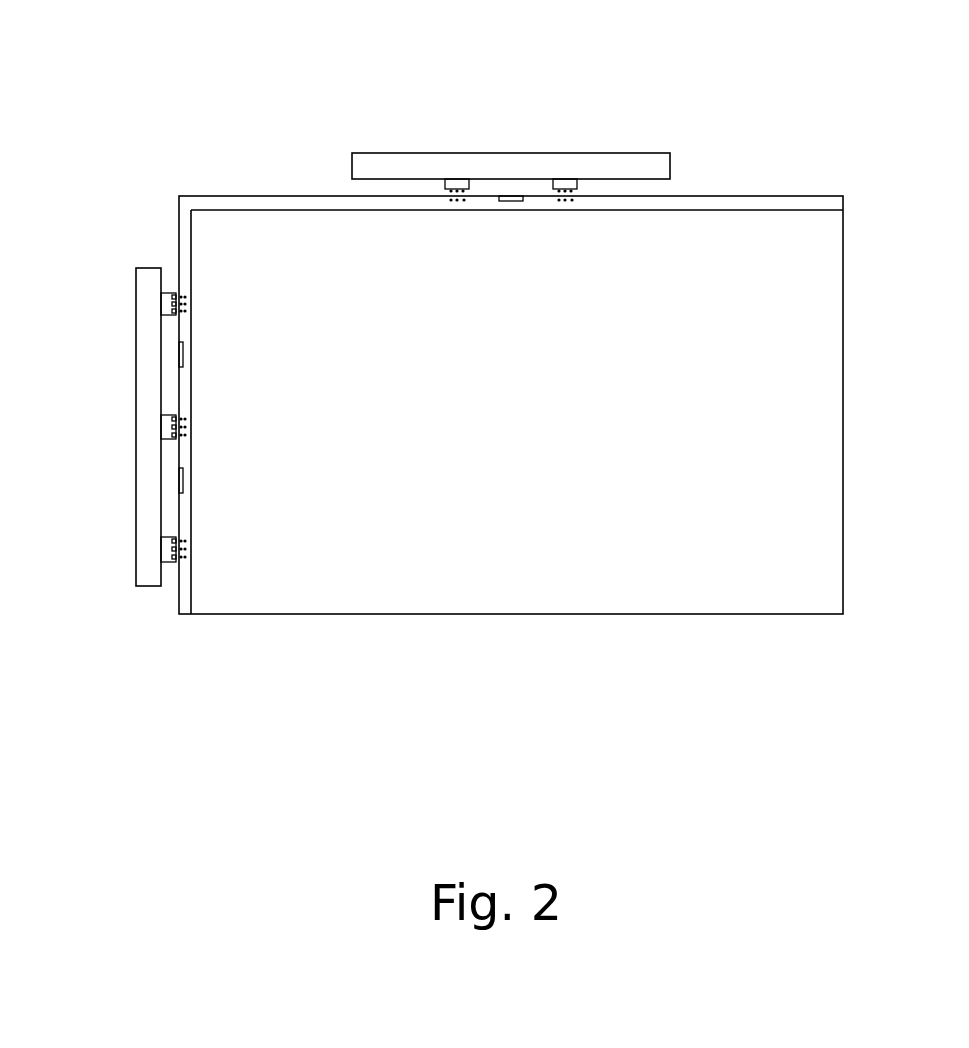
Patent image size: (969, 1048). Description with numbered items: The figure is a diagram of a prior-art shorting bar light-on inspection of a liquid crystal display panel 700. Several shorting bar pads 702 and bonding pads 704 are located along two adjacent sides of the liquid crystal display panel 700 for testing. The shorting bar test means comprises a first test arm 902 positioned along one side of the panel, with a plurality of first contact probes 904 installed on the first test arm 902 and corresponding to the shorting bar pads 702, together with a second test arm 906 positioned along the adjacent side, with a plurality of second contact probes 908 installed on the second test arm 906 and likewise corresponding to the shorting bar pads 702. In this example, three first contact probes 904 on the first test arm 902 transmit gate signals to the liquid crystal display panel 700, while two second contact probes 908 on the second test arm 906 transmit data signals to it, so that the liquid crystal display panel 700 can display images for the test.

The liquid crystal display panel 700 is at (723, 260).
The shorting bar pads 702 is at (178, 295).
The bonding pads 704 is at (180, 352).
The first test arm 902 is at (143, 418).
The first contact probes 904 is at (167, 303).
The second test arm 906 is at (525, 166).
The second contact probes 908 is at (461, 185).